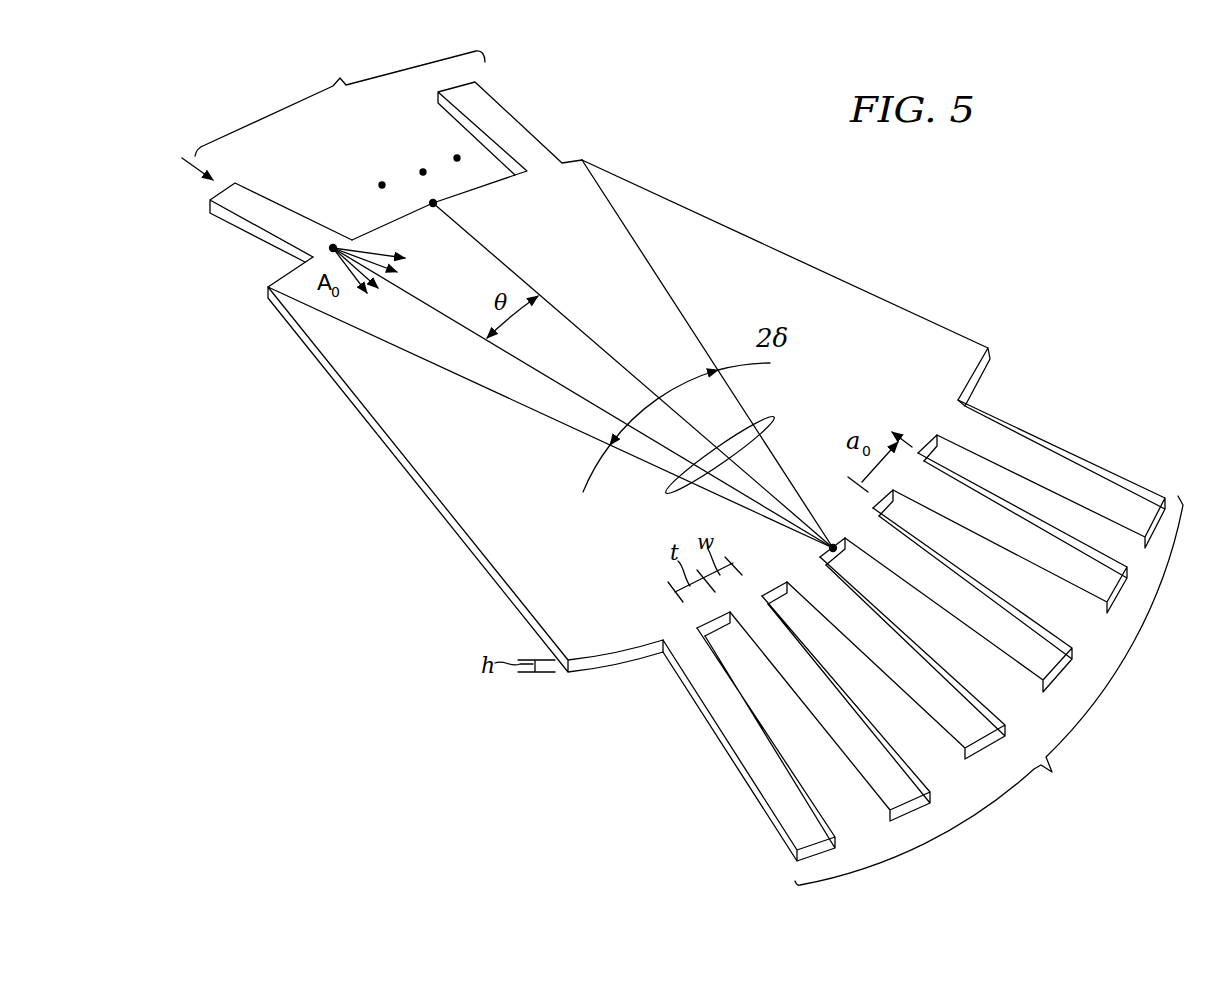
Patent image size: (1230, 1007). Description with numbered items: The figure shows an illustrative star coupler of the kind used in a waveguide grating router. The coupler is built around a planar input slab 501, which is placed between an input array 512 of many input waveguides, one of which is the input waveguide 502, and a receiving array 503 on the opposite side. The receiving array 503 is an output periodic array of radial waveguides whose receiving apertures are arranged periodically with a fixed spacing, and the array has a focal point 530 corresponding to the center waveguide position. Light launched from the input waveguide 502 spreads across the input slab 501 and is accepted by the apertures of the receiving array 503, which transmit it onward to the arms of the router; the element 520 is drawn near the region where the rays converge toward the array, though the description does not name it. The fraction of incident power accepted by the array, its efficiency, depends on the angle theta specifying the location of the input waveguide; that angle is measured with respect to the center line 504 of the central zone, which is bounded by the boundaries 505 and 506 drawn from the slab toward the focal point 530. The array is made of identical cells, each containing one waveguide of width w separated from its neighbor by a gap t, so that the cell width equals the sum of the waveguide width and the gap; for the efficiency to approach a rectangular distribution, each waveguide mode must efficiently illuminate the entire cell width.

The input slab 501 is at (536, 572).
The input waveguide 502 is at (268, 213).
The receiving array 503 is at (923, 642).
The center line 504 is at (503, 258).
The boundary 505 is at (663, 280).
The boundary 506 is at (478, 384).
The input array 512 is at (333, 119).
The focal spot / beam waist 520 is at (776, 420).
The focal point 530 is at (436, 204).